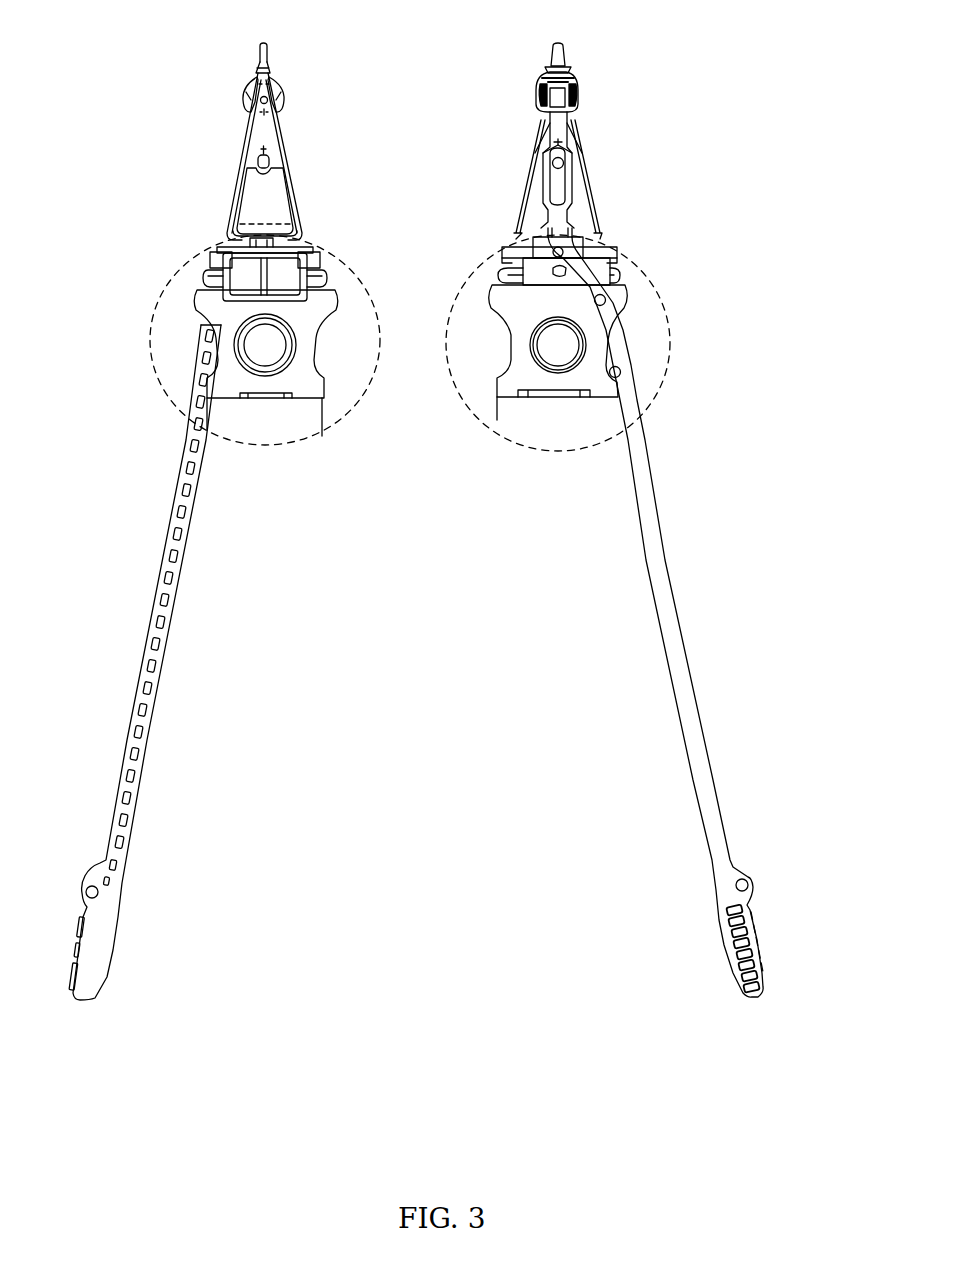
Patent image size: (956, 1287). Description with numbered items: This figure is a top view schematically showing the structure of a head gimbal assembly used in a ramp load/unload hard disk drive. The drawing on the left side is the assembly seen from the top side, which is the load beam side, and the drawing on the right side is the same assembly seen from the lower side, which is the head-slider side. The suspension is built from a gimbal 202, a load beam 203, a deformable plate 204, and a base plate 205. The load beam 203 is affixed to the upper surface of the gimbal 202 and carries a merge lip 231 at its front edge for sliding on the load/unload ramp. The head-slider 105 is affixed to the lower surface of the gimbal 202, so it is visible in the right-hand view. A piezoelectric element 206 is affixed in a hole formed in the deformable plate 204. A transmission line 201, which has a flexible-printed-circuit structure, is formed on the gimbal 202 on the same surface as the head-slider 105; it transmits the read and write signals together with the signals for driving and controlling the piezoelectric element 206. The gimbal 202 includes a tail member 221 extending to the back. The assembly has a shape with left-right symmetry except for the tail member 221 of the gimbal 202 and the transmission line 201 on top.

The merge lip 231 is at (268, 52).
The gimbal 202 is at (288, 93).
The load beam 203 is at (288, 148).
The piezoelectric element 206 is at (285, 275).
The deformable plate 204 is at (217, 400).
The base plate 205 is at (318, 398).
The tail member 221 is at (167, 647).
The head-slider 105 is at (576, 90).
The transmission line 201 is at (622, 458).